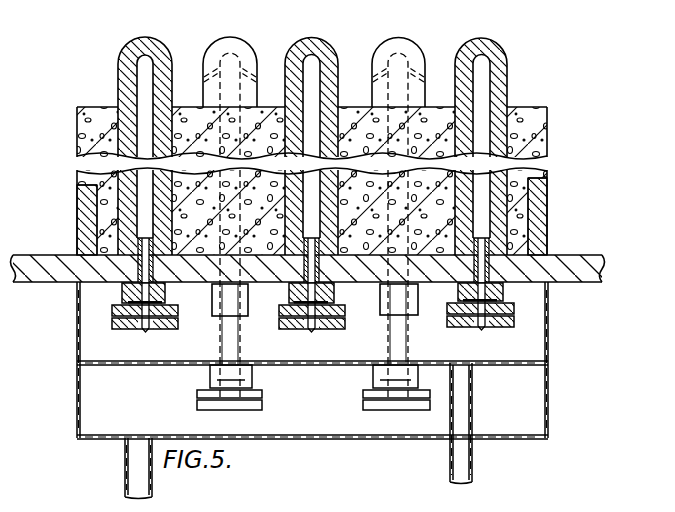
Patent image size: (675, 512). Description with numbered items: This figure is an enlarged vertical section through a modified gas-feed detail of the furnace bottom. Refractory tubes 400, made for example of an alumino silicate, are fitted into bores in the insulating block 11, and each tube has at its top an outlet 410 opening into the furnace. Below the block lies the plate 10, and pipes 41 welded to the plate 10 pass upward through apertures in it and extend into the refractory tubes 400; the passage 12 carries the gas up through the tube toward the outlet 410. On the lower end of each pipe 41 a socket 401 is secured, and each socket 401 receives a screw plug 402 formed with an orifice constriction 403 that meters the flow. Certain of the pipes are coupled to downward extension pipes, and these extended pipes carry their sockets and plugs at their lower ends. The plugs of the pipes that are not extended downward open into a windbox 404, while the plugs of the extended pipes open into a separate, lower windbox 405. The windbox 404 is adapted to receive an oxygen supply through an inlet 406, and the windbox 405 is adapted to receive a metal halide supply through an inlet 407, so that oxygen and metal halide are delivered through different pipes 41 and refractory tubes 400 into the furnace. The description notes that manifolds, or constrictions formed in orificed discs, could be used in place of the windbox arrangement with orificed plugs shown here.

The plate 10 is at (575, 244).
The insulating block 11 is at (533, 123).
The nozzle passage 12 is at (478, 90).
The pipes 41 is at (137, 270).
The refractory tubes 400 is at (125, 133).
The sockets 401 is at (122, 290).
The screw plugs 402 is at (112, 326).
The orifice constrictions 403 is at (141, 331).
The windbox 404 is at (331, 356).
The windbox 405 is at (331, 411).
The inlet 406 is at (470, 460).
The inlet 407 is at (125, 467).
The outlets 410 is at (118, 77).